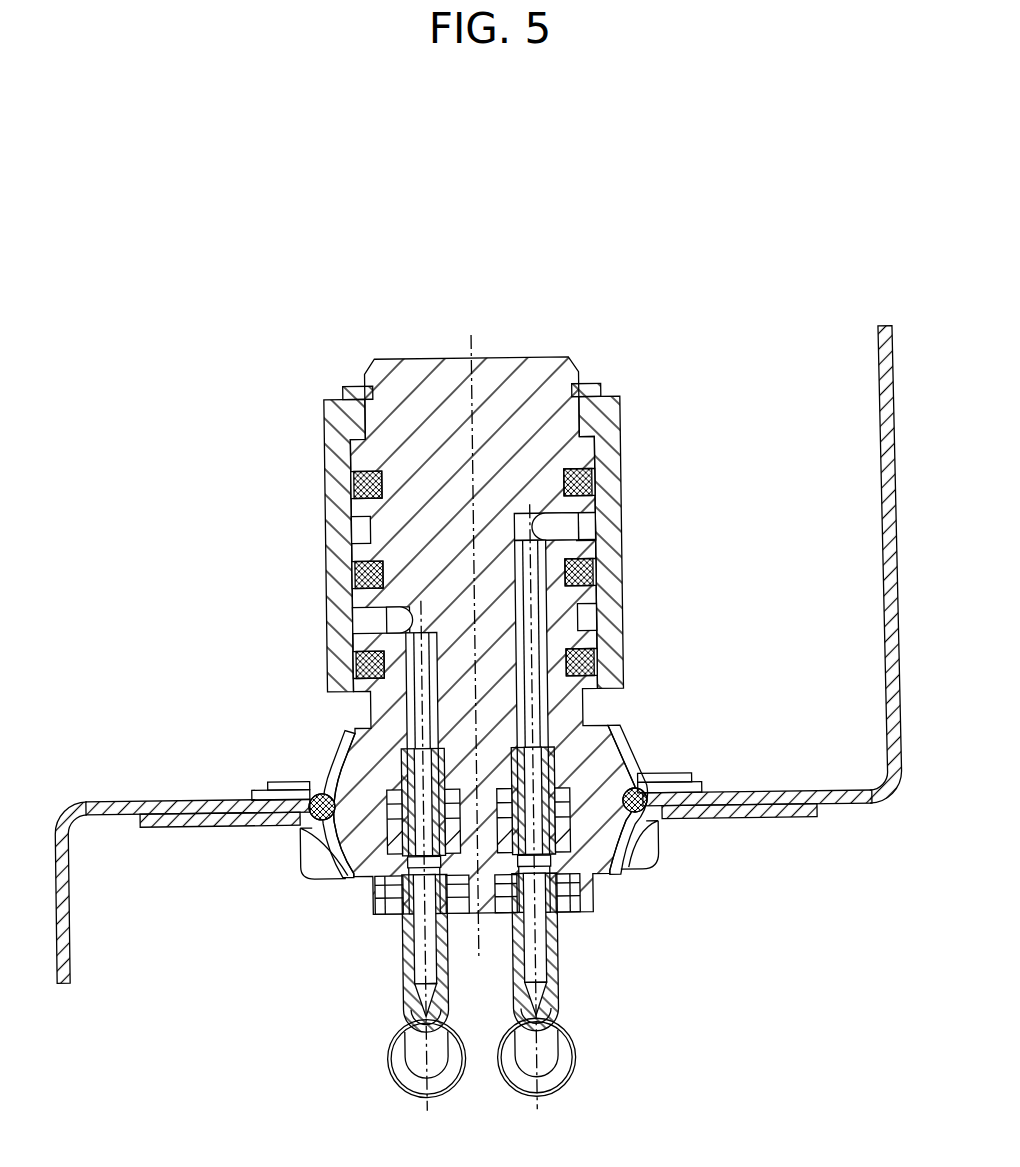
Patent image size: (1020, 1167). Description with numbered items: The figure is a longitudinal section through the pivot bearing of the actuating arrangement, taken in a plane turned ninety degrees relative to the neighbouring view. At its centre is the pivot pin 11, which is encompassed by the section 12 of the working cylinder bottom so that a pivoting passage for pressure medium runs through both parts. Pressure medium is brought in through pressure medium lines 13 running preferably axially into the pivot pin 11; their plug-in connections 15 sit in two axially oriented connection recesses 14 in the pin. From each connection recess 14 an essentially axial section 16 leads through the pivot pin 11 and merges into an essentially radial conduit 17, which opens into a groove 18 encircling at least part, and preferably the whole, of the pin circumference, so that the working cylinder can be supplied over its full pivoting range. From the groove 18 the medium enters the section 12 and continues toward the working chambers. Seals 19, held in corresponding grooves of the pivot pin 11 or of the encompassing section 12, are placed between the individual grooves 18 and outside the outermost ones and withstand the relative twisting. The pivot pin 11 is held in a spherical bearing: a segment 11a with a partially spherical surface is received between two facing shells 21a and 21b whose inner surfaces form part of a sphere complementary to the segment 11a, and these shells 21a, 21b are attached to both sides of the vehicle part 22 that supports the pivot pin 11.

The pivot pin 11 is at (437, 444).
The segment of the pivot pin 11a is at (593, 804).
The section of the bottom 12 is at (612, 436).
The pressure medium lines 13 is at (419, 968).
The connection recesses 14 is at (386, 796).
The plug-in connections 15 is at (375, 876).
The section for the pressure medium 16 is at (538, 628).
The radial conduit 17 is at (546, 531).
The groove 18 is at (363, 530).
The seals 19 is at (594, 481).
The shell 21a is at (690, 790).
The shell 21b is at (768, 815).
The vehicle part 22 is at (889, 763).